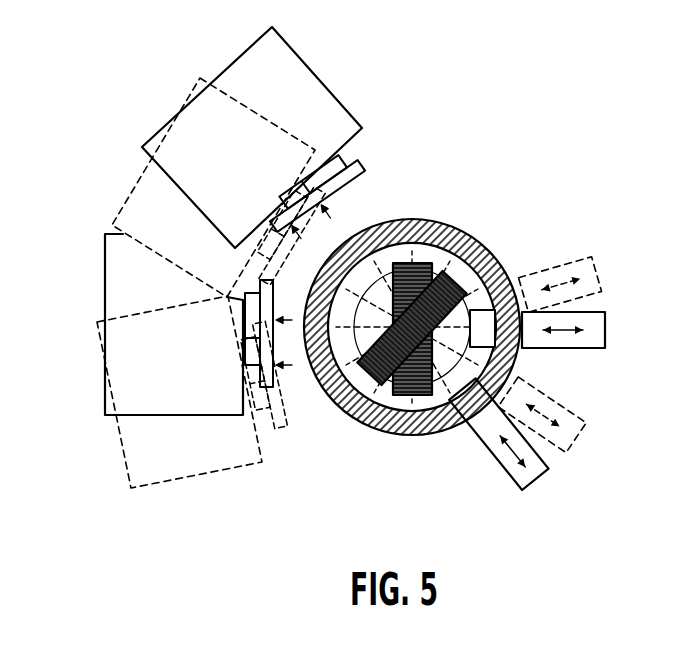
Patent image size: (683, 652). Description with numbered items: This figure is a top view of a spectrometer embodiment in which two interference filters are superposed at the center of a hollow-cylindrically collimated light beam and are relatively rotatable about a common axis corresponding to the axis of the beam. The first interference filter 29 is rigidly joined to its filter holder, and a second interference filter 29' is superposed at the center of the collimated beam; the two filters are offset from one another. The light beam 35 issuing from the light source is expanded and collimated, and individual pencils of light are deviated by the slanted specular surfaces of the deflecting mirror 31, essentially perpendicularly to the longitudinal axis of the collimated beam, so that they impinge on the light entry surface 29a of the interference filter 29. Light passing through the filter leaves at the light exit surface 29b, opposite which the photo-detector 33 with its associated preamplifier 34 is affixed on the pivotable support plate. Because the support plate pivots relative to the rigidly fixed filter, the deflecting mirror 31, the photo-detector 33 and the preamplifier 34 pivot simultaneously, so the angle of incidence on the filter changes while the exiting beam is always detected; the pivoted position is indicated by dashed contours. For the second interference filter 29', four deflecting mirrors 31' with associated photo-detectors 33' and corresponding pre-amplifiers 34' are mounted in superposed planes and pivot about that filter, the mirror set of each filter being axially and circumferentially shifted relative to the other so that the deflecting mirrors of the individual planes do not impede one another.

The interference filter 29 is at (436, 275).
The second interference filter 29' is at (517, 279).
The light entry surface 29a is at (437, 385).
The light exit surface 29b is at (383, 302).
The deflecting mirror 31 is at (586, 302).
The deflecting mirror 31' is at (539, 433).
The photo-detector 33 is at (345, 271).
The photo-detector 33' is at (326, 197).
The preamplifier 34 is at (152, 361).
The pre-amplifier 34' is at (237, 158).
The light beam 35 is at (432, 263).